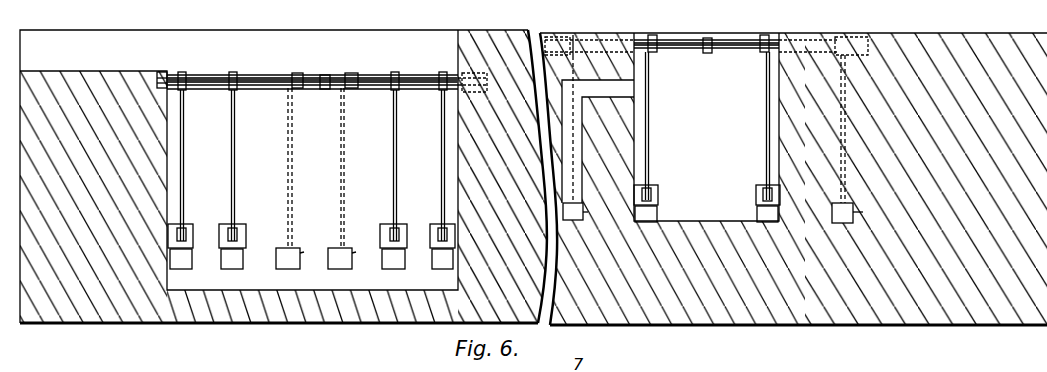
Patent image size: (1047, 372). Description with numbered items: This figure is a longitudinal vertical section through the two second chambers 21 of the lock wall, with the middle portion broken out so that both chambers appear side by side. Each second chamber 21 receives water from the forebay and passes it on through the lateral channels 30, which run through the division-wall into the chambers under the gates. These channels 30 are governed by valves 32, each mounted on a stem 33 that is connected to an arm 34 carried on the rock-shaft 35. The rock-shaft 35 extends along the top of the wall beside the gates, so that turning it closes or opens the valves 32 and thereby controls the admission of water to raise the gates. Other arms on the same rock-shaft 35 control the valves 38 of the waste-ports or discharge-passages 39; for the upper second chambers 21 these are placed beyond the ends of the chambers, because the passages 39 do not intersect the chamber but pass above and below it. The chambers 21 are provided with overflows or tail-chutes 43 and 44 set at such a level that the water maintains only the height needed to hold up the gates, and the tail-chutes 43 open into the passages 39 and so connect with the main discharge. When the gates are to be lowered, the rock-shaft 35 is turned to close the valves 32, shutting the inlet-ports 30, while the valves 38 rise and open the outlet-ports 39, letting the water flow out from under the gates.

The second chamber 21 is at (566, 151).
The channels 30 is at (474, 237).
The valves 32 is at (474, 216).
The stems 33 is at (475, 146).
The arms 34 is at (473, 62).
The rock-shaft 35 is at (512, 63).
The valves 38 is at (564, 236).
The discharge-passages 39 is at (589, 234).
The tail-chute 43 is at (598, 141).
The tail-chute 44 is at (288, 177).